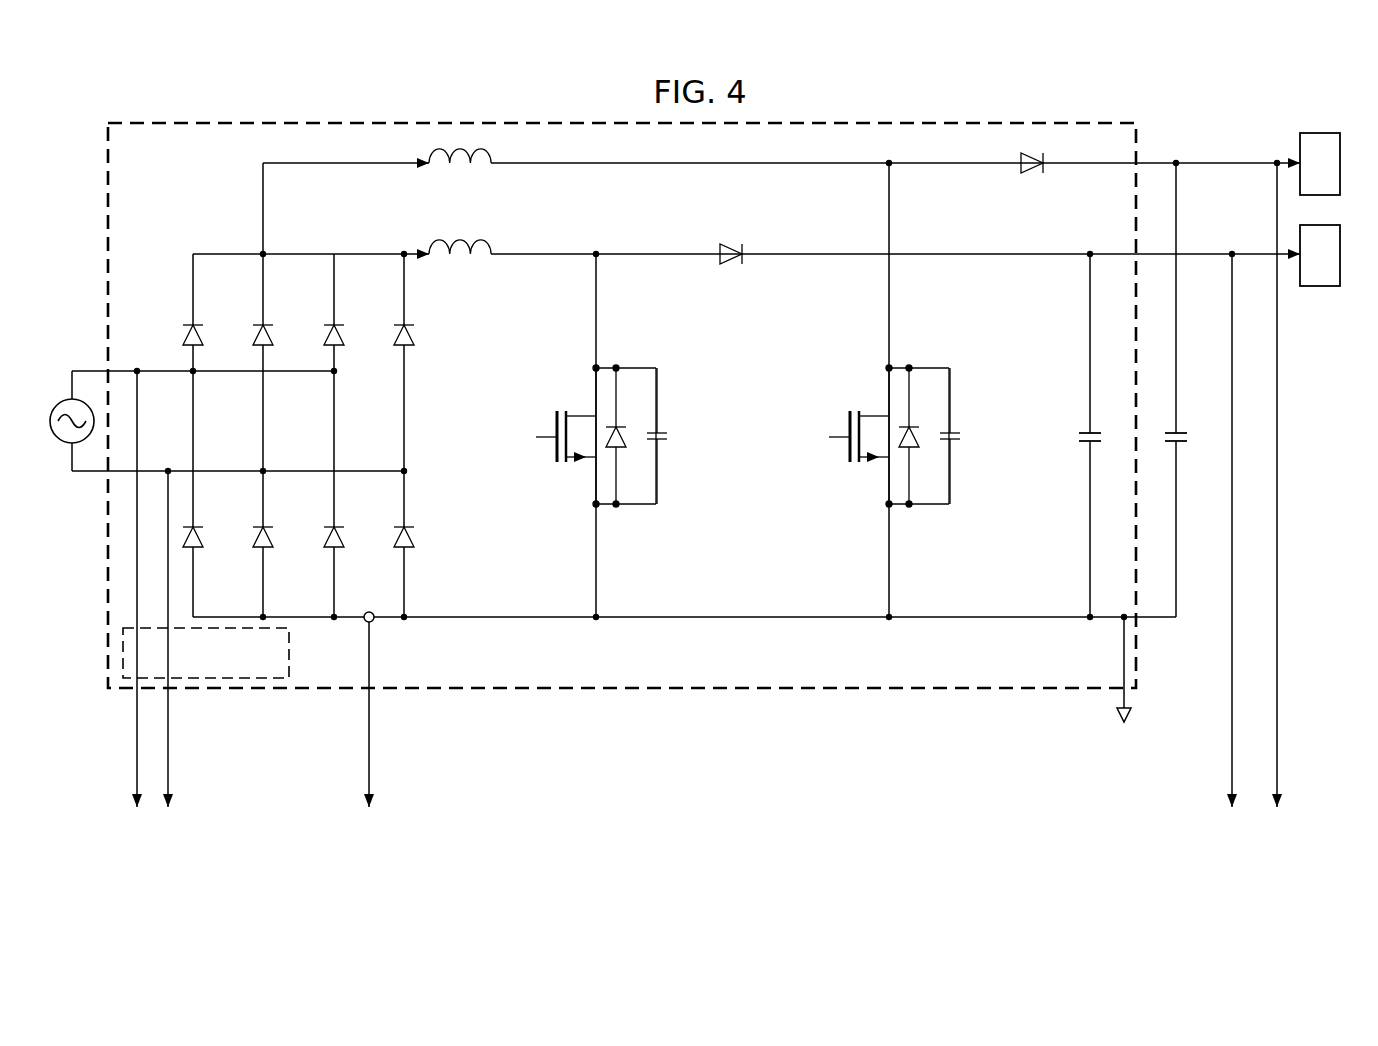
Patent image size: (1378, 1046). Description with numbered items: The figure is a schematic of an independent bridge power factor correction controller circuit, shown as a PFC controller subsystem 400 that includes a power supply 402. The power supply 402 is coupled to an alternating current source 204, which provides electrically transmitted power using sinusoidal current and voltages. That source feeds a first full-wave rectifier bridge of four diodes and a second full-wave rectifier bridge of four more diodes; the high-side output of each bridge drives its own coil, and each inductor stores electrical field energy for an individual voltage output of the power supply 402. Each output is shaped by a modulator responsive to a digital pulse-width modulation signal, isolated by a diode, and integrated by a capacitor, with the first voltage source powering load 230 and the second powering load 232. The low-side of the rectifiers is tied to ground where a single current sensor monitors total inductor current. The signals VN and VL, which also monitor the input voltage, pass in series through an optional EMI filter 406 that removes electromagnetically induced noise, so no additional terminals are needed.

The PFC controller subsystem 400 is at (339, 74).
The power supply 402 is at (259, 119).
The alternating current source 204 is at (55, 434).
The electromagnetic interference (EMI) filter 406 is at (290, 651).
The load 230 is at (1320, 133).
The load 232 is at (1320, 286).